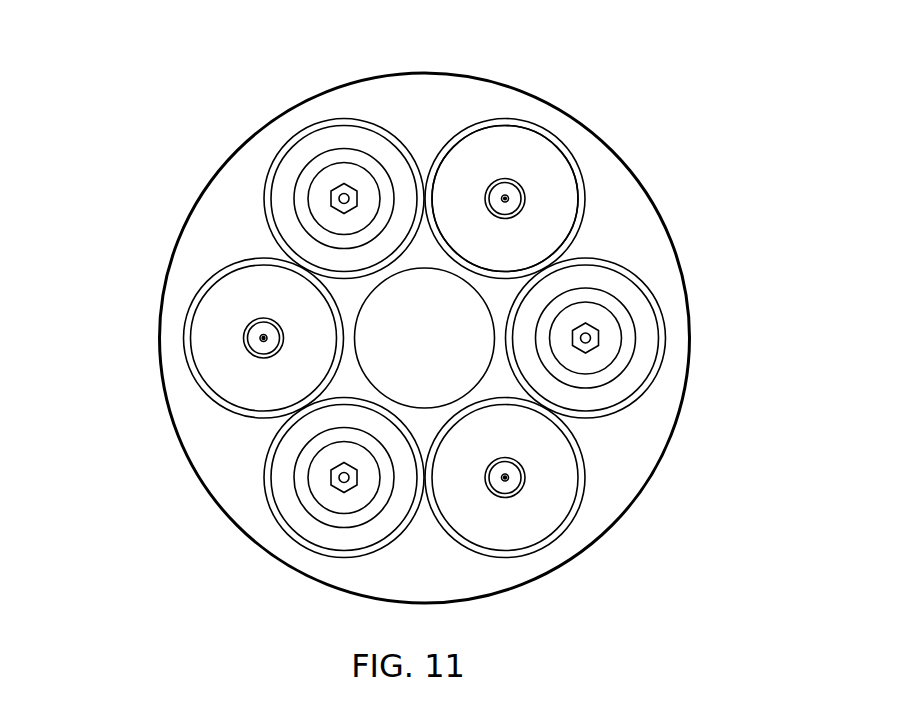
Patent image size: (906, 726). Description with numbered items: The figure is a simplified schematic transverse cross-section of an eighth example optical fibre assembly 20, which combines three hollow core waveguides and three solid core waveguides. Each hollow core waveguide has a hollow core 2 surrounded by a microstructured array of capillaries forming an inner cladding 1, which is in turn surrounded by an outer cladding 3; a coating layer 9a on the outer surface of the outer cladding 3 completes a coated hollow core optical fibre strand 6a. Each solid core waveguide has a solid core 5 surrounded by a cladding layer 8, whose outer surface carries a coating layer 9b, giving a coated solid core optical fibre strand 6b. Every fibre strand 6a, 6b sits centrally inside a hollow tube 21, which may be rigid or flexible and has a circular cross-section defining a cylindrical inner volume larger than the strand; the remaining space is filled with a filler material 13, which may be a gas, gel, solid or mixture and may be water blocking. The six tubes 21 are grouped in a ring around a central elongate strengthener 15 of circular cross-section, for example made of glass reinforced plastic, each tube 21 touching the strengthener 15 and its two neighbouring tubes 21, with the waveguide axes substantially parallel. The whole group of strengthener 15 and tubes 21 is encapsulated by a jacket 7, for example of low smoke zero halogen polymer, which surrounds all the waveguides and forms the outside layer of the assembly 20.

The optical fibre assembly 20 is at (124, 54).
The jacket 7 is at (253, 543).
The strengthener 15 is at (355, 378).
The coating layer 9a is at (312, 167).
The coating layer 9b is at (523, 178).
The hollow tube 21 is at (340, 118).
The filler material 13 is at (377, 143).
The coated hollow core optical fibre strand 6a is at (305, 228).
The coated solid core optical fibre strand 6b is at (573, 230).
The outer cladding 3 is at (320, 213).
The inner cladding 1 is at (330, 195).
The hollow core 2 is at (343, 184).
The solid core 5 is at (520, 195).
The cladding layer 8 is at (513, 202).